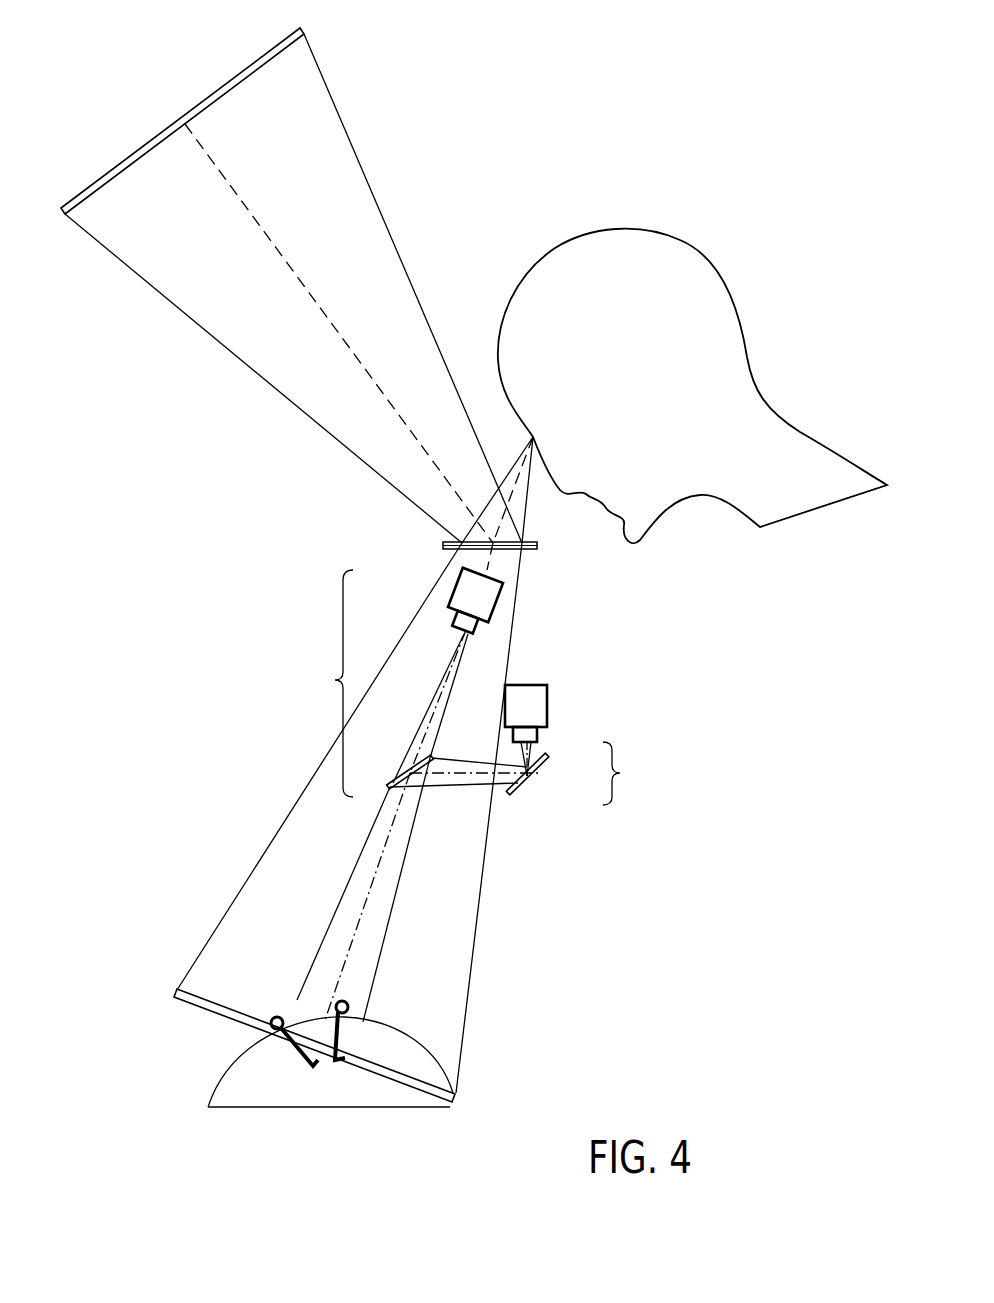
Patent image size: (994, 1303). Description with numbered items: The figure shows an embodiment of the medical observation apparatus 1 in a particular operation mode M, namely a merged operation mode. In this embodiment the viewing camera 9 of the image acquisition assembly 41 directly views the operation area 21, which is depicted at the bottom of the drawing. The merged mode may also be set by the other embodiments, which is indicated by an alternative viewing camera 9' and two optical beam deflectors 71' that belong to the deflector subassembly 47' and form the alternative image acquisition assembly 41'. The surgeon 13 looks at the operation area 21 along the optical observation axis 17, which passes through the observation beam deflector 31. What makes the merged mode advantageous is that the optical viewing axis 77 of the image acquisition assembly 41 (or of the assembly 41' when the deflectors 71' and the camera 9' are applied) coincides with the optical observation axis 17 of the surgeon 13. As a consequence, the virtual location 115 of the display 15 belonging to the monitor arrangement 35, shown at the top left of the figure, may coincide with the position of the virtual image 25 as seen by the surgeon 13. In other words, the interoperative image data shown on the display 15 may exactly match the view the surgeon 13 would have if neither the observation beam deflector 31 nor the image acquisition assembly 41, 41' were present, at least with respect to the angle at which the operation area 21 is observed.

The medical observation apparatus 1 is at (150, 533).
The operation mode M is at (109, 579).
The display 15 is at (182, 121).
The monitor arrangement 35 is at (147, 143).
The surgeon 13 is at (693, 262).
The optical observation axis 17 is at (513, 492).
The observation beam deflector 31 is at (443, 545).
The viewing camera 9 is at (506, 602).
The viewing camera 9' is at (546, 711).
The image acquisition assembly 41 is at (401, 670).
The image acquisition assembly 41' is at (401, 670).
The deflector subassembly 47' is at (589, 773).
The optical beam deflectors 71' is at (481, 762).
The optical viewing axis 77 is at (373, 885).
The operation area 21 is at (397, 1021).
The virtual image 25 is at (281, 1045).
The virtual location 115 is at (205, 1012).